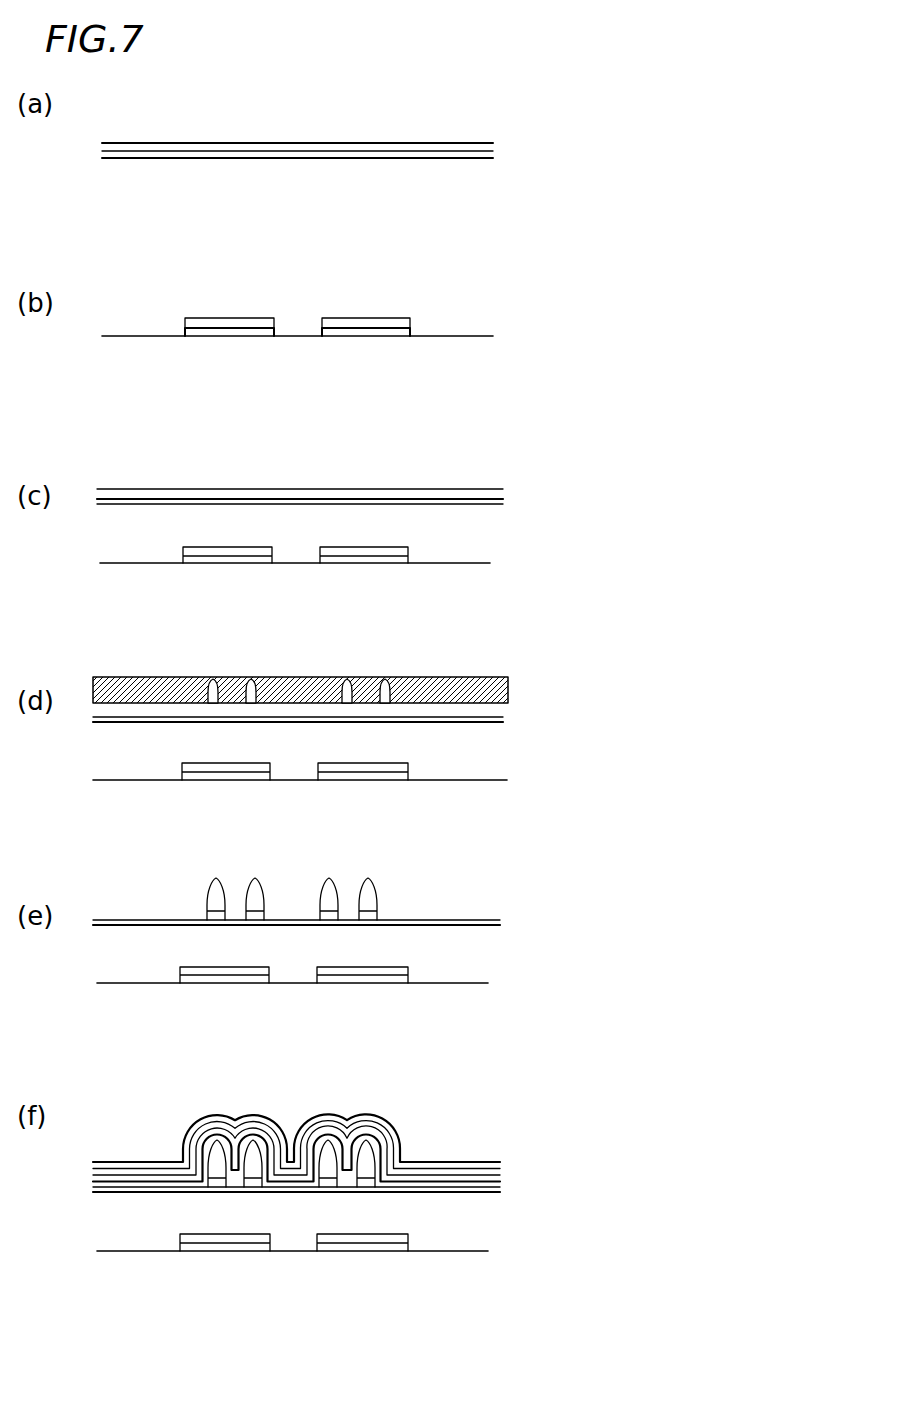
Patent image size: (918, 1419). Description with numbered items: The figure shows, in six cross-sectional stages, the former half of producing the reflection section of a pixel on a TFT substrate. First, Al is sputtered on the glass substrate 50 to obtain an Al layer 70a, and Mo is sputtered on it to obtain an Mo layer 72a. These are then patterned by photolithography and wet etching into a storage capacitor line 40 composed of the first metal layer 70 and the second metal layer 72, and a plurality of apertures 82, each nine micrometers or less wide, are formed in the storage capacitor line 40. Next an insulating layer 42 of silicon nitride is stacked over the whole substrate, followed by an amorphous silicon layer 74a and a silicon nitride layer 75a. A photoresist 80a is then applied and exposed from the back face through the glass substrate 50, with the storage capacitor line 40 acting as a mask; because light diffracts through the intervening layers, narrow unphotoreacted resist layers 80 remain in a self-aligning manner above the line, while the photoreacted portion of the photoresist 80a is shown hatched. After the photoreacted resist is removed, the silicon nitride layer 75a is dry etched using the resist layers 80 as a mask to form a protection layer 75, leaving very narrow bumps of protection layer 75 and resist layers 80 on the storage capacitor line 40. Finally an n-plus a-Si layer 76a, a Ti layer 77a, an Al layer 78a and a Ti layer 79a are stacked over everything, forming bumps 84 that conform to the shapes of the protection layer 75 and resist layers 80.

The glass substrate 50 is at (485, 210).
The Mo layer 72a is at (493, 143).
The Al layer 70a is at (493, 155).
The second metal layer 72 is at (410, 320).
The first metal layer 70 is at (410, 331).
The storage capacitor line 40 is at (370, 766).
The apertures 82 is at (301, 321).
The amorphous silicon layer 74a is at (503, 504).
The silicon nitride layer 75a is at (503, 490).
The insulating layer 42 is at (478, 547).
The photoresist 80a is at (508, 680).
The resist layers 80 is at (250, 677).
The protection layer 75 is at (375, 917).
The n+a-Si layer 76a is at (398, 1180).
The Ti layer 77a is at (143, 1180).
The Al layer 78a is at (165, 1173).
The Ti layer 79a is at (220, 1122).
The bumps 84 is at (330, 1125).